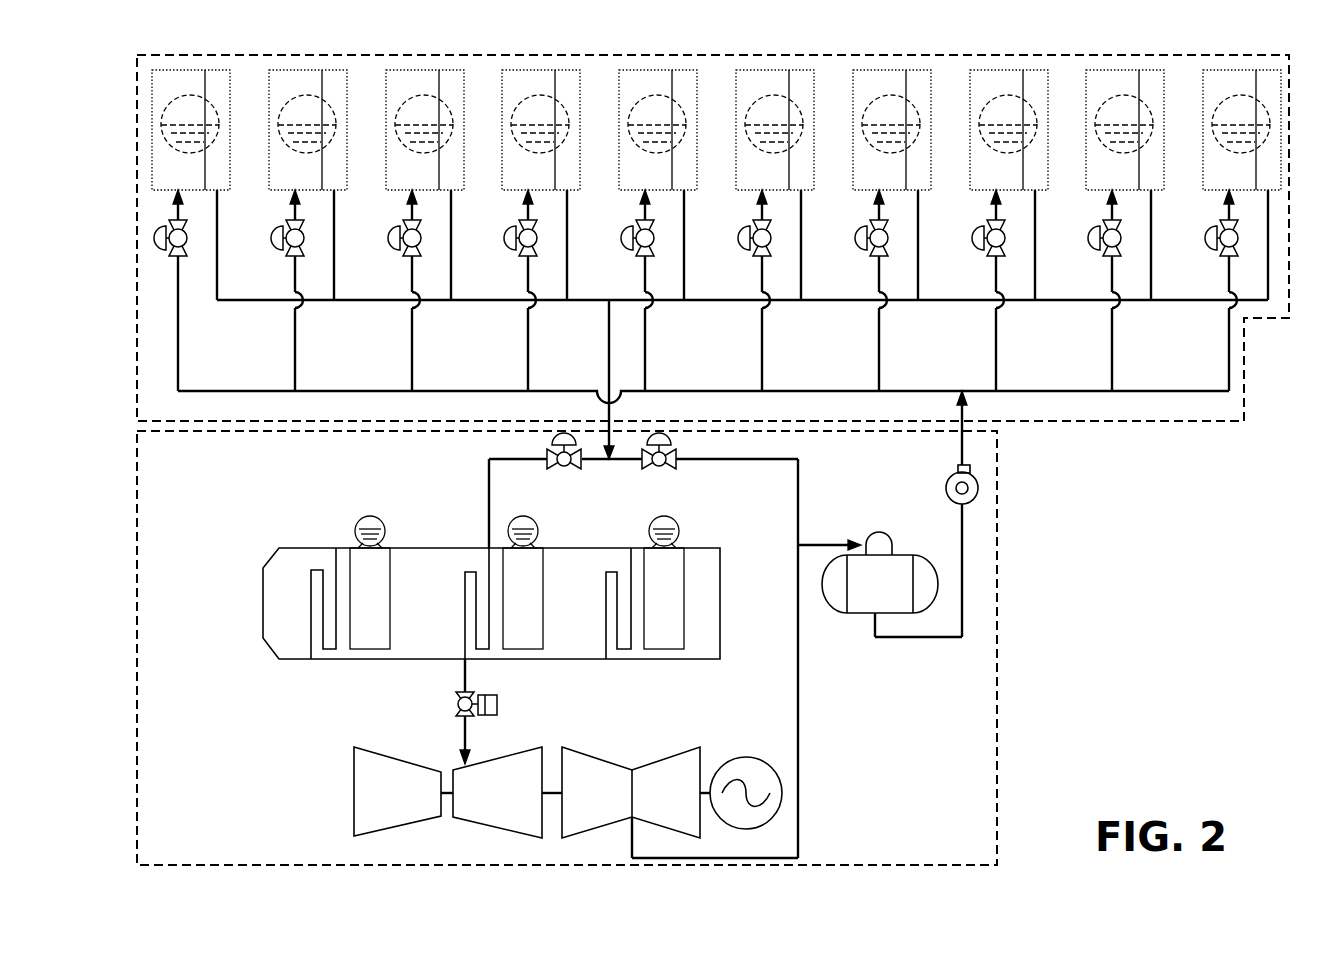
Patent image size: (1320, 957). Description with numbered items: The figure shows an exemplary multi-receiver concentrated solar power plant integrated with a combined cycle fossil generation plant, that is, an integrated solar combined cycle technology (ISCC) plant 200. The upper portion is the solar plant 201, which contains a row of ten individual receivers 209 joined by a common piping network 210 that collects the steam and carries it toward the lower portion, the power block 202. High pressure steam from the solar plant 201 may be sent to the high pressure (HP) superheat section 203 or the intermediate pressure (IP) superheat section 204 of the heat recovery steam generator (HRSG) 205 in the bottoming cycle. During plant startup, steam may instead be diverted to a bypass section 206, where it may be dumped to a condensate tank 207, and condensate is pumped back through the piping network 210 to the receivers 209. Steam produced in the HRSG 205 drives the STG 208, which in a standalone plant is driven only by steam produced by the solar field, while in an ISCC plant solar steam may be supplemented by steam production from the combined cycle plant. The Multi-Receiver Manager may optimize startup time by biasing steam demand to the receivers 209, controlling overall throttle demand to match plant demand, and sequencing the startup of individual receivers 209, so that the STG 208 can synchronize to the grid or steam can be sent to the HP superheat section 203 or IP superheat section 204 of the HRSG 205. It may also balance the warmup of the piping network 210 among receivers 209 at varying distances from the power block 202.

The integrated solar combined cycle technology (ISCC) plant 200 is at (1207, 727).
The solar plant 201 is at (181, 418).
The power block 202 is at (182, 859).
The high pressure (HP) superheat section 203 is at (335, 568).
The intermediate pressure (IP) superheat section 204 is at (489, 567).
The heat recovery steam generator (HRSG) 205 is at (508, 659).
The bypass section 206 is at (700, 460).
The condensate tank 207 is at (860, 613).
The STG (steam turbine generator) 208 is at (483, 820).
The receivers 209 is at (1203, 168).
The piping network 210 is at (200, 391).